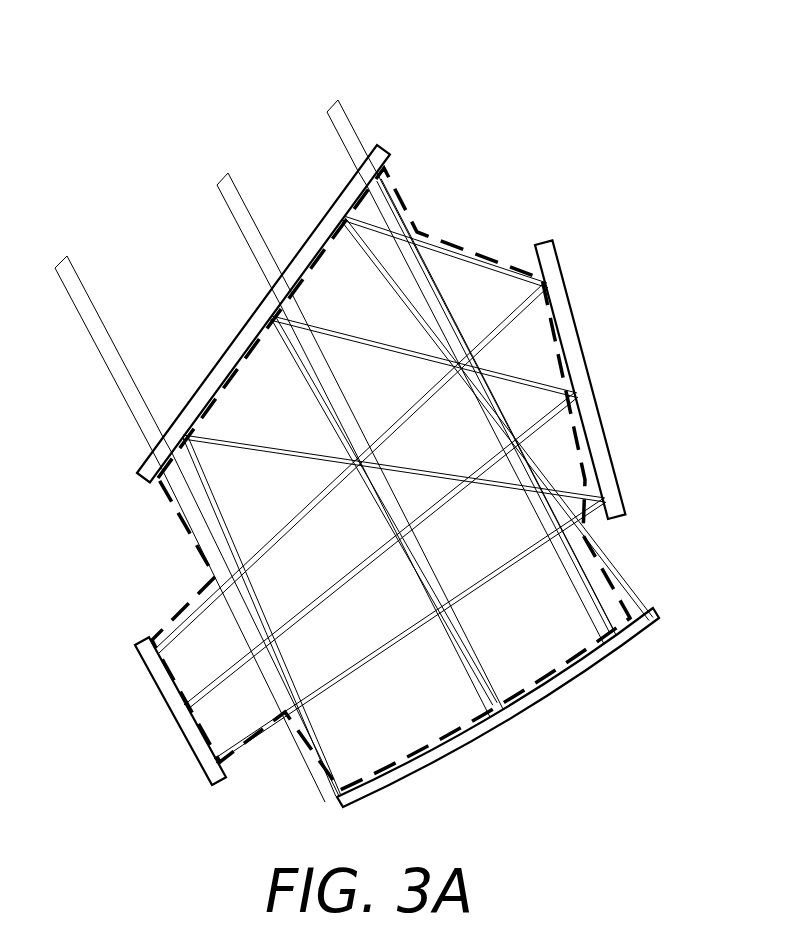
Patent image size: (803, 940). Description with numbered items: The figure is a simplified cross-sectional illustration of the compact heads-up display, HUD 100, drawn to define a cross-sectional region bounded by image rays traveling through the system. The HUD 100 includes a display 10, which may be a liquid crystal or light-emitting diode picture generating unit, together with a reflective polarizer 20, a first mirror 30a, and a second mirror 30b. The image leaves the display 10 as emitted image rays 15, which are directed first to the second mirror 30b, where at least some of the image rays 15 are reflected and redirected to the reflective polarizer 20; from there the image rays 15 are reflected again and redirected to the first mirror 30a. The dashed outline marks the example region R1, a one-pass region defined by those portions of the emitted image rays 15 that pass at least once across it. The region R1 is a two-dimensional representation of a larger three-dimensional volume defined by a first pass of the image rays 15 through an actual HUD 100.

The HUD 100 is at (170, 97).
The display 10 is at (178, 728).
The emitted image rays 15 is at (305, 506).
The reflective polarizer 20 is at (392, 147).
The first mirror 30a is at (650, 608).
The second mirror 30b is at (585, 362).
The region R1 is at (198, 552).